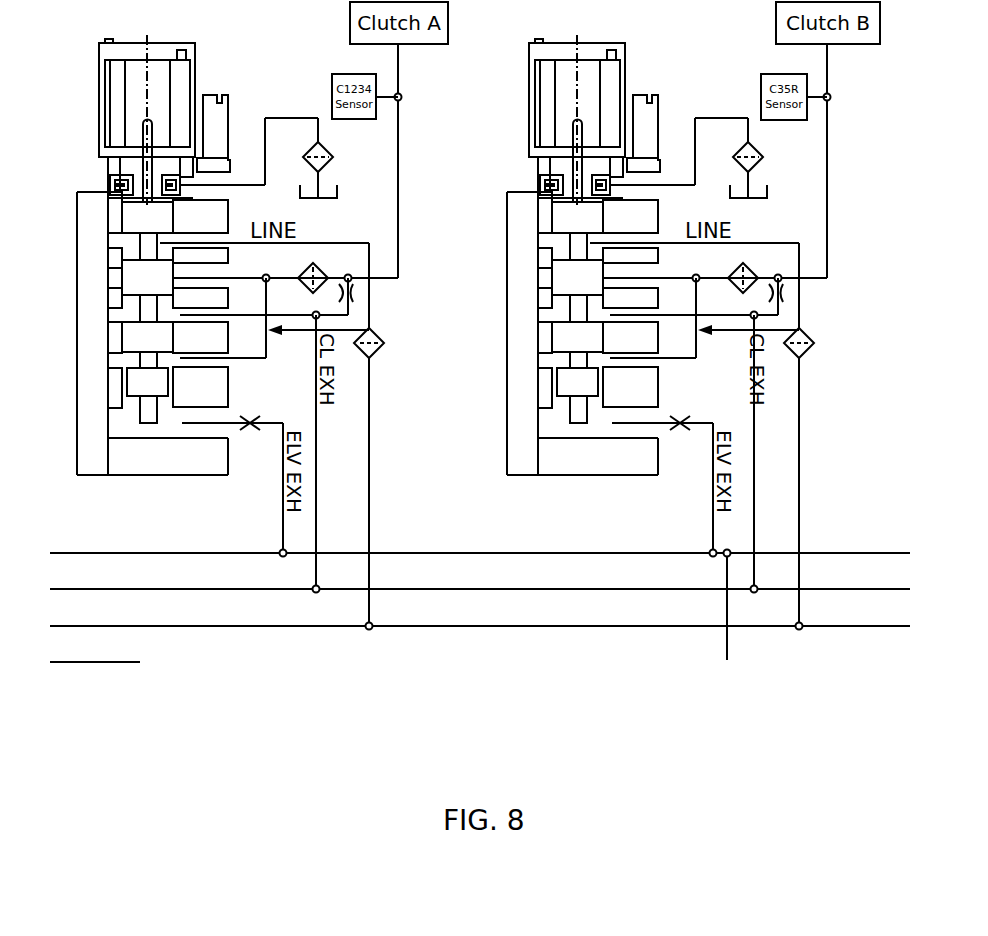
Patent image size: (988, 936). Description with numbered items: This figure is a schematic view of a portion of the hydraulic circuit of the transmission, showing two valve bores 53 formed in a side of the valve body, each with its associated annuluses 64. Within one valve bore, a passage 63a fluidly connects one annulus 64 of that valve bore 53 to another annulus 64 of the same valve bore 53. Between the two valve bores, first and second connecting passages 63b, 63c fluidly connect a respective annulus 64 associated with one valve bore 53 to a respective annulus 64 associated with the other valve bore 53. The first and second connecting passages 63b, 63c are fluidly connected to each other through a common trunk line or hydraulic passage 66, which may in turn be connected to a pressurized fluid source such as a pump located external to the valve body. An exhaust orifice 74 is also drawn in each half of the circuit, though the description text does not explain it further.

The valve bore 53 is at (170, 240).
The annulus 64 is at (106, 240).
The passage 63a is at (378, 334).
The first connecting passage 63b is at (384, 490).
The second connecting passage 63c is at (814, 490).
The exhaust orifice 74 is at (688, 493).
The hydraulic passage 66 is at (540, 636).